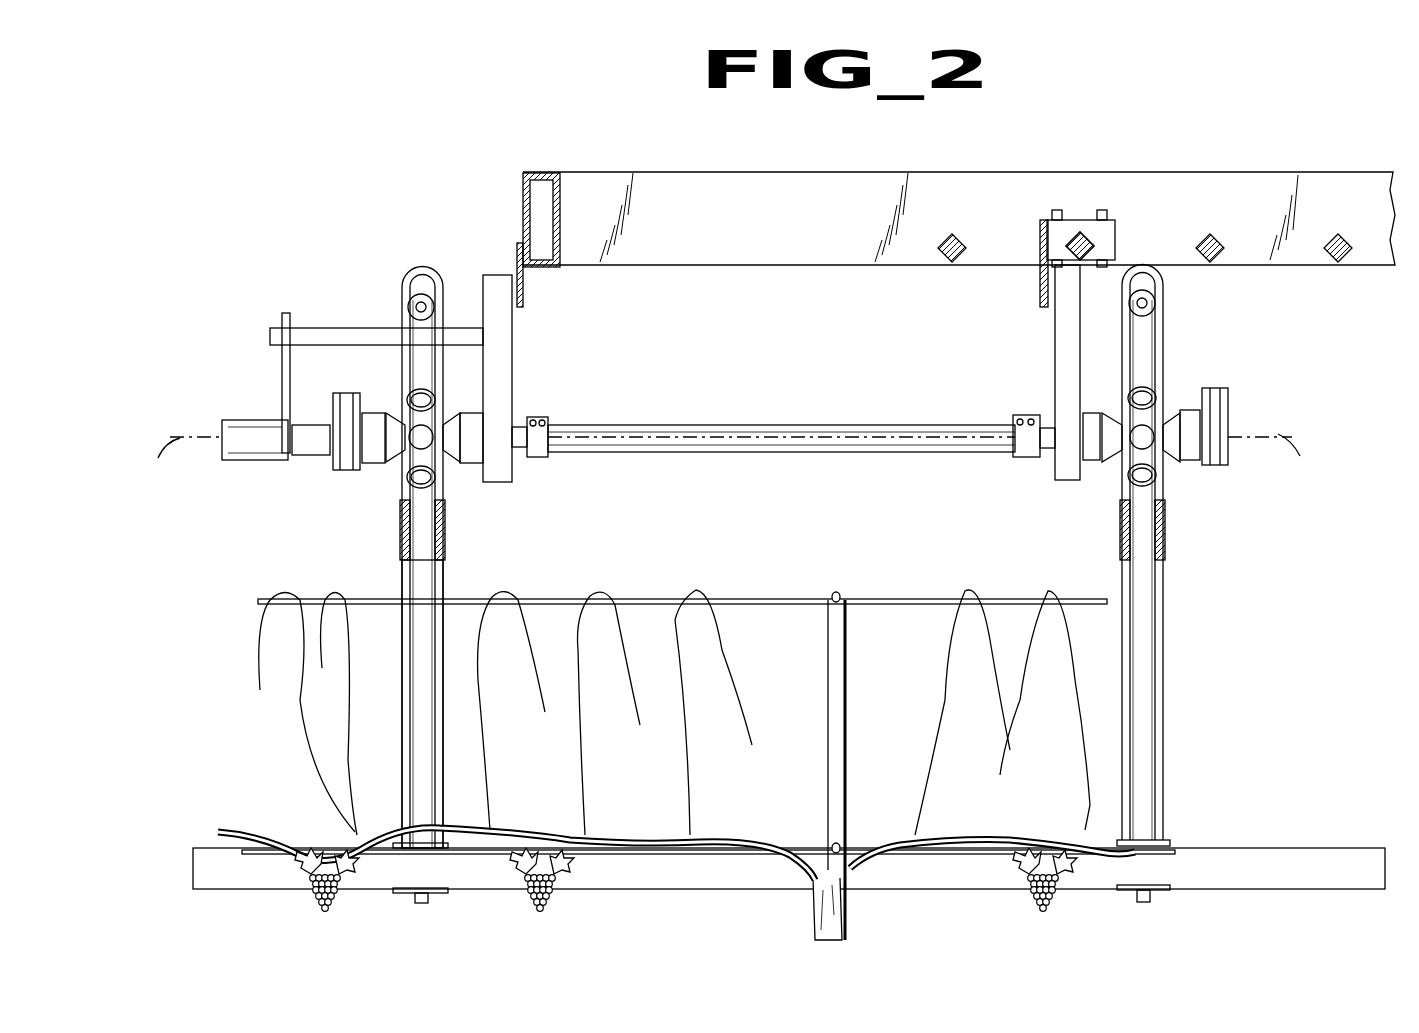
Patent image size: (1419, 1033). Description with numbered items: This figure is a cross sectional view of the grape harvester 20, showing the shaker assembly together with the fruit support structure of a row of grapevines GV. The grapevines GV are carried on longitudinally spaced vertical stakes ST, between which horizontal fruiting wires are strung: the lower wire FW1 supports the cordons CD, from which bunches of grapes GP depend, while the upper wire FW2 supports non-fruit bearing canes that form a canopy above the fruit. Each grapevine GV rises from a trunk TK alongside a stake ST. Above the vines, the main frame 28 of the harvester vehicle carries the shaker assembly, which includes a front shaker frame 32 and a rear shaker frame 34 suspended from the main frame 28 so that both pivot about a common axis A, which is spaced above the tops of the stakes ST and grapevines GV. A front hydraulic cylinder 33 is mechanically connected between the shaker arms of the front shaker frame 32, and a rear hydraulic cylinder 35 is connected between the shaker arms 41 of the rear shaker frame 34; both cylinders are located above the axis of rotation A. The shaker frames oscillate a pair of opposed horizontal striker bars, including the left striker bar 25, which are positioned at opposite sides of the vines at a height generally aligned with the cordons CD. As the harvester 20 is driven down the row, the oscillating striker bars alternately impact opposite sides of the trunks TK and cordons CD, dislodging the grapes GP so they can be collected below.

The grape harvester 20 is at (1040, 130).
The main frame 28 is at (1176, 170).
The rear shaker frame 34 is at (404, 270).
The rear hydraulic cylinder 35 is at (410, 295).
The shaker arms 41 is at (402, 575).
The front shaker frame 32 is at (1148, 588).
The front hydraulic cylinder 33 is at (1150, 290).
The left striker bar 25 is at (612, 890).
The axis A— A is at (731, 458).
The lower fruiting wire FW1 is at (801, 848).
The upper fruiting wire FW2 is at (866, 598).
The stakes ST is at (846, 682).
The cordons CD is at (640, 838).
The grapes GP is at (312, 893).
The grapevines GV is at (676, 768).
The trunks TK is at (836, 920).